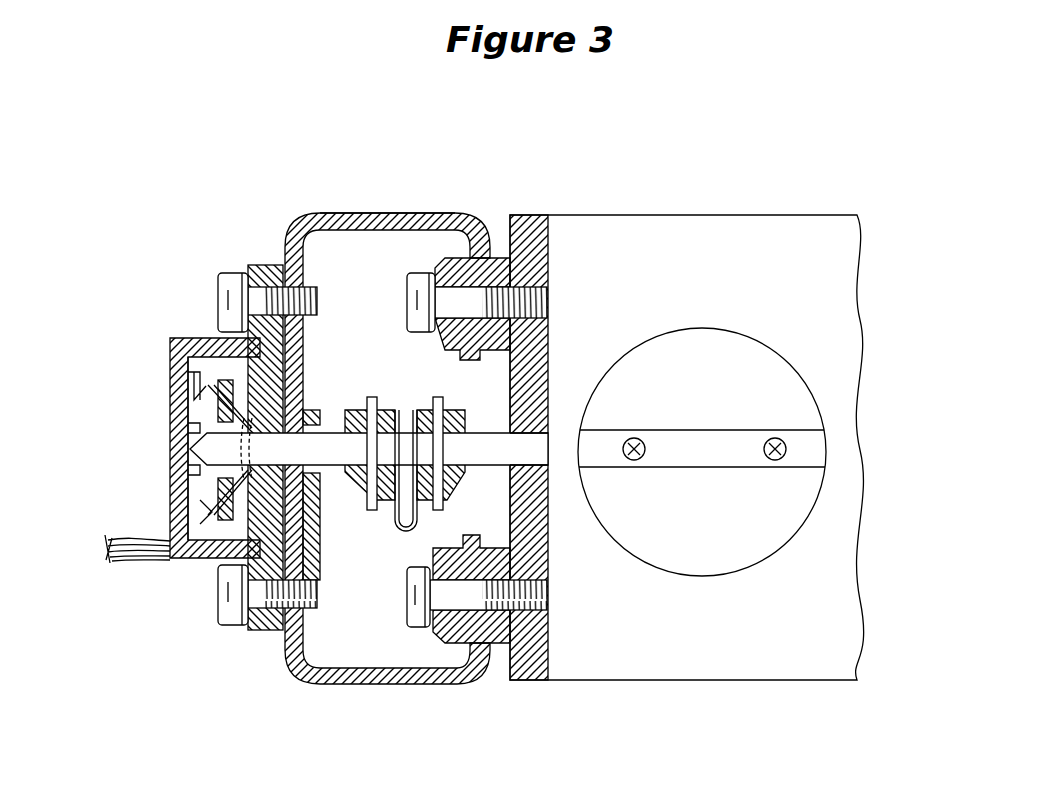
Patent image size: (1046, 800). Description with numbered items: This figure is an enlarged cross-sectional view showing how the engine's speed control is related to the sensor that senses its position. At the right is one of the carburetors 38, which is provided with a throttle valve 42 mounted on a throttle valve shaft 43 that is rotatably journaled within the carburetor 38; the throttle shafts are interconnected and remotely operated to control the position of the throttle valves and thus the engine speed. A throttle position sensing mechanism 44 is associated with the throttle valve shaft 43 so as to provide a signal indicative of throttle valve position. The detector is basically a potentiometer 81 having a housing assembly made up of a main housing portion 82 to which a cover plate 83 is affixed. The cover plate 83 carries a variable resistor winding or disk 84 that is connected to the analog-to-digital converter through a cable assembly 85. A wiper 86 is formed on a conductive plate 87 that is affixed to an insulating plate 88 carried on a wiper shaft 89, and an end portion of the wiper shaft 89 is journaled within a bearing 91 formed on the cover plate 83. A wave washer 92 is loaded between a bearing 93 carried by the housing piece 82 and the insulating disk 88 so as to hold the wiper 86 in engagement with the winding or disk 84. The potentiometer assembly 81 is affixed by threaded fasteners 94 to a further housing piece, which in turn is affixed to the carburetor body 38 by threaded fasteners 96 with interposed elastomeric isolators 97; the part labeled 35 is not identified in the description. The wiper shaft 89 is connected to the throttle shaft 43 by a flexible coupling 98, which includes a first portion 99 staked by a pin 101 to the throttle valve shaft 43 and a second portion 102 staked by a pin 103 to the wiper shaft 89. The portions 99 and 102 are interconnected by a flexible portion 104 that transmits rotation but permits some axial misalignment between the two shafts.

The housing top wall 35 is at (392, 213).
The carburetor 38 is at (505, 220).
The throttle valve 42 is at (737, 330).
The throttle valve shaft 43 is at (547, 417).
The throttle position sensing mechanism 44 is at (355, 205).
The potentiometer 81 is at (160, 413).
The main housing portion 82 is at (193, 335).
The cover plate 83 is at (168, 352).
The variable resistor winding or disk 84 is at (193, 508).
The cable assembly 85 is at (127, 533).
The wiper 86 is at (200, 477).
The conductive plate 87 is at (207, 560).
The insulating plate 88 is at (264, 268).
The wiper shaft 89 is at (331, 455).
The bearing 91 is at (205, 446).
The wave washer 92 is at (300, 525).
The bearing 93 is at (300, 397).
The threaded fasteners 94 is at (232, 278).
The threaded fasteners 96 is at (418, 298).
The elastomeric isolators 97 is at (458, 355).
The flexible coupling 98 is at (396, 552).
The first portion 99 is at (547, 400).
The pin 101 is at (512, 378).
The second portion 102 is at (358, 397).
The pin 103 is at (372, 397).
The flexible portion 104 is at (382, 532).